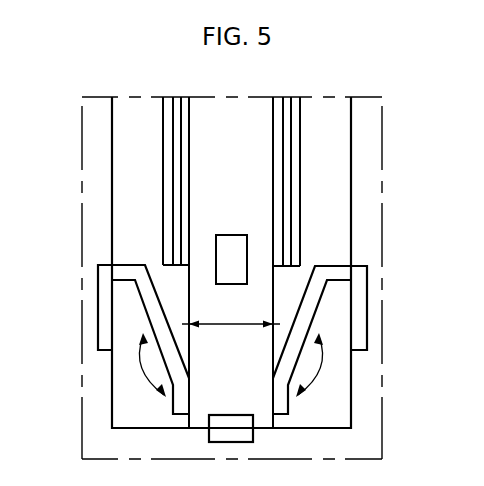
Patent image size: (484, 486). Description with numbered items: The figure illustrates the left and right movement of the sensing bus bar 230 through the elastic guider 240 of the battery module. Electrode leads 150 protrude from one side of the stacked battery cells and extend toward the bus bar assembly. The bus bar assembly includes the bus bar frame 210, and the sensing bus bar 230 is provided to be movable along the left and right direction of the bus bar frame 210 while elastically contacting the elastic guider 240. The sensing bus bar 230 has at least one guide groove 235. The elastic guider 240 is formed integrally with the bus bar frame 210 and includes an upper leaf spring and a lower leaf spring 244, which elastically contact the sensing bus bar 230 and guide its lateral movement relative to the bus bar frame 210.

The electrode lead 150 is at (163, 148).
The bus bar frame 210 is at (365, 440).
The sensing bus bar 230 is at (222, 209).
The guide groove 235 is at (230, 253).
The elastic guider 240 is at (90, 305).
The lower leaf spring 244 is at (357, 302).